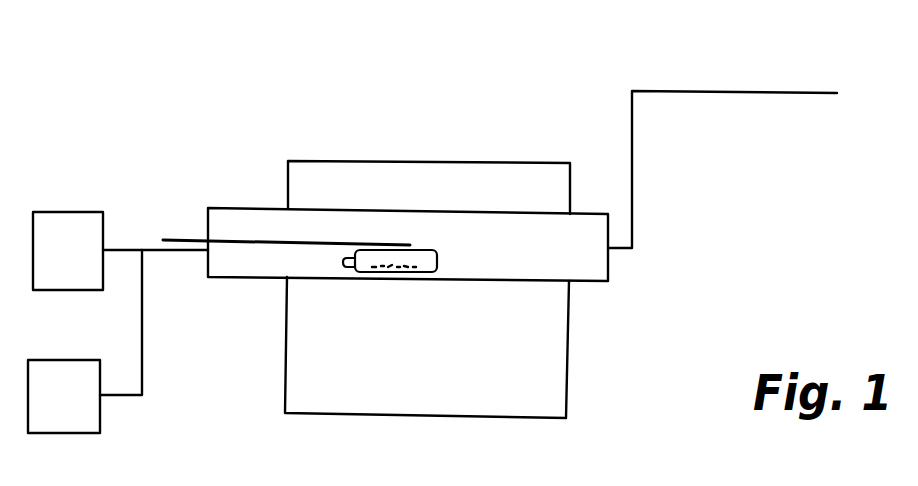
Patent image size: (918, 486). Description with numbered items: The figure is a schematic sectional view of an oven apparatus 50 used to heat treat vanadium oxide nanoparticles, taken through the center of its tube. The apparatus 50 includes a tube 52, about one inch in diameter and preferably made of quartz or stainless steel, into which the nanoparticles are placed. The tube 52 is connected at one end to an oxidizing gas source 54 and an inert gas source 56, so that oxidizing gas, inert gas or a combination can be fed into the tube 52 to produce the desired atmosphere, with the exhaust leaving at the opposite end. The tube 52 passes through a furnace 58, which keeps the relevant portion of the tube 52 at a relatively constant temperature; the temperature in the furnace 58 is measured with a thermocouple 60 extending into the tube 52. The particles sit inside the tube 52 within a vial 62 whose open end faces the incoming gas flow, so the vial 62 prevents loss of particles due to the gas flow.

The apparatus 50 is at (395, 68).
The tube 52 is at (590, 282).
The oxidizing gas source 54 is at (75, 425).
The inert gas source 56 is at (68, 212).
The furnace 58 is at (543, 378).
The thermocouple 60 is at (177, 240).
The vial 62 is at (433, 250).